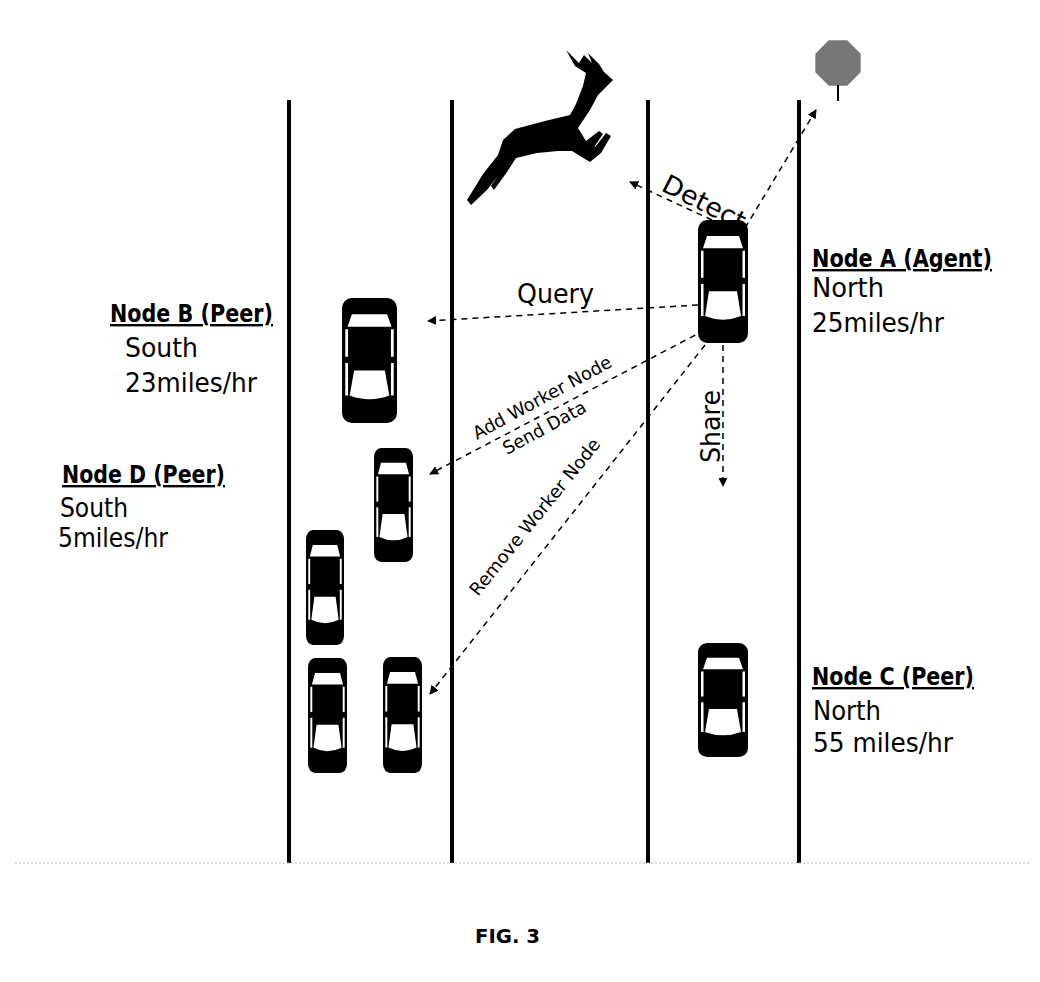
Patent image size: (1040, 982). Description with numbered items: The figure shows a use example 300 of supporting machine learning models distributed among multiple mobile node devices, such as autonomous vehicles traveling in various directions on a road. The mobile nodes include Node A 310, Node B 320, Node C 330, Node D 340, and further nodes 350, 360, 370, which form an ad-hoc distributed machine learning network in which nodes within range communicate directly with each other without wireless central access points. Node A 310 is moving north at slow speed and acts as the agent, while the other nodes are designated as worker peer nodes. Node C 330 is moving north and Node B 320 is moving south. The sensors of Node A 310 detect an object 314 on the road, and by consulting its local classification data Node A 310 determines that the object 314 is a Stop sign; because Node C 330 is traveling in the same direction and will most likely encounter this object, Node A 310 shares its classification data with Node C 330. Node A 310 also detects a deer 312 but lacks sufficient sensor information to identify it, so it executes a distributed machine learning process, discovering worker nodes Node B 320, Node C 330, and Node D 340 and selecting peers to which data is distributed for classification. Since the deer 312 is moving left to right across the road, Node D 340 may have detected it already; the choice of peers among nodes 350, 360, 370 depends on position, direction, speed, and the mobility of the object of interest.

The use example 300 is at (212, 106).
The Node A 310 is at (750, 258).
The deer 312 is at (595, 68).
The object 314 is at (856, 44).
The Node B 320 is at (355, 300).
The Node C 330 is at (720, 643).
The Node D 340 is at (375, 485).
The node 350 is at (407, 657).
The node 360 is at (305, 597).
The node 370 is at (310, 713).